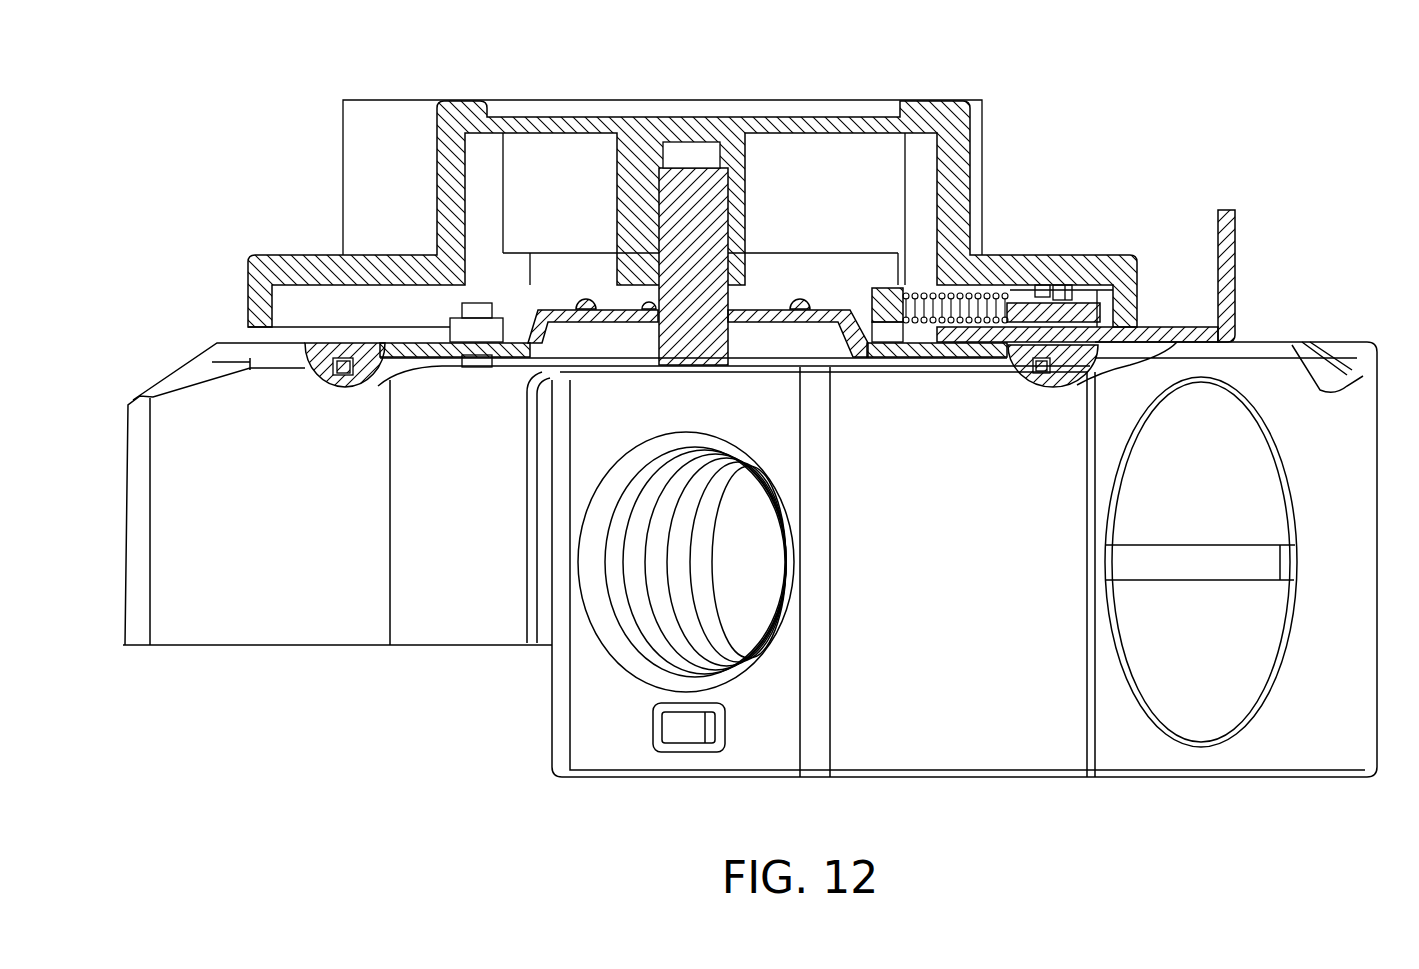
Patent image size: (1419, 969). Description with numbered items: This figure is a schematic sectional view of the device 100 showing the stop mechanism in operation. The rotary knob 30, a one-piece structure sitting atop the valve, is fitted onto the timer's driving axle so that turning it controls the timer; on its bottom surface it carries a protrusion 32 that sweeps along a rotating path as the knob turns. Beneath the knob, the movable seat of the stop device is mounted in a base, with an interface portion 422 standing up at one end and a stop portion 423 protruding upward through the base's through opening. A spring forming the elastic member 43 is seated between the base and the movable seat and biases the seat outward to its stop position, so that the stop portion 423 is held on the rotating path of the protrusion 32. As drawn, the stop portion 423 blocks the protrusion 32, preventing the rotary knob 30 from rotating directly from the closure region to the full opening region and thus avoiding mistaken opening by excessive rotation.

The pressure reducing valve assembly 100 is at (281, 159).
The rotary knob 30 is at (976, 155).
The protrusion 32 is at (1046, 297).
The interface portion 422 is at (1236, 262).
The stop portion 423 is at (1072, 293).
The elastic member 43 is at (952, 328).